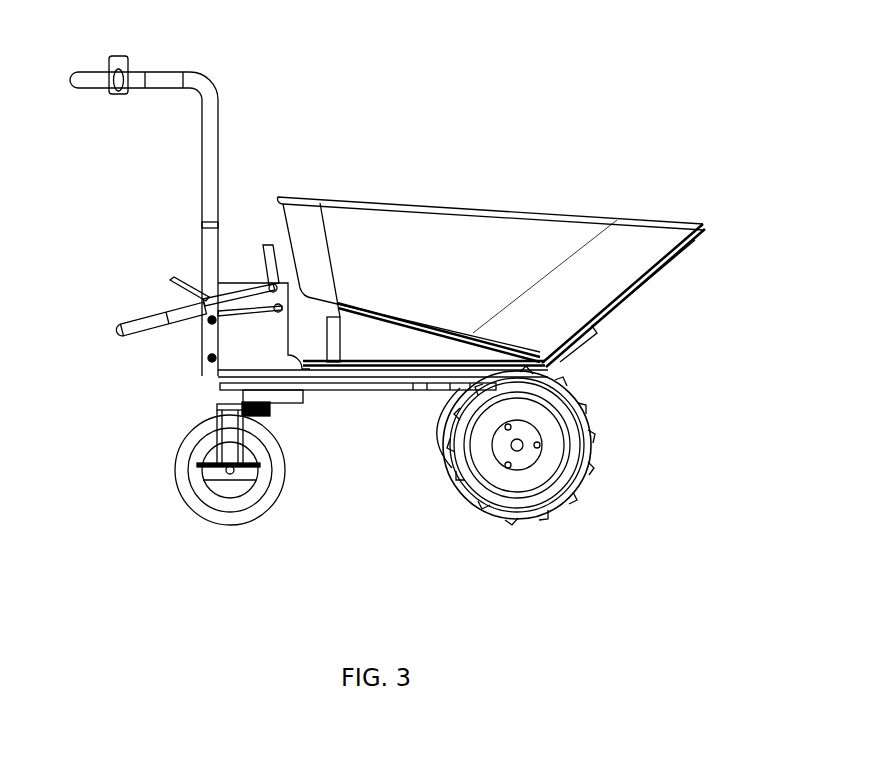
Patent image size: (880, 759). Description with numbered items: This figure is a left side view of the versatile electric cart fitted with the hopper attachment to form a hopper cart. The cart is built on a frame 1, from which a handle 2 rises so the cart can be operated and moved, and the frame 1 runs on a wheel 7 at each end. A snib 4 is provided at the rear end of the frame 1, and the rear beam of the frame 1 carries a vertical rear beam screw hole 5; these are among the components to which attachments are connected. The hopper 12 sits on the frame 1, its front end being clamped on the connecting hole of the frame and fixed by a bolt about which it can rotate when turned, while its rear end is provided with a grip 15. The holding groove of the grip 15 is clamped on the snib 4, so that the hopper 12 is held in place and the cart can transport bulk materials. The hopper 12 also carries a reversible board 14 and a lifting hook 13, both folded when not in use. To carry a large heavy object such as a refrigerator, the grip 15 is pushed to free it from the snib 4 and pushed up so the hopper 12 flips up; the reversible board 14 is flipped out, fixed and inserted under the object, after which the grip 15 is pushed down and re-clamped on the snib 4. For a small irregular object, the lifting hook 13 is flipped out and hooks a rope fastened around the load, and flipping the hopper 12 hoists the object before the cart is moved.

The frame 1 is at (382, 424).
The handle 2 is at (129, 216).
The snib 4 is at (229, 326).
The rear beam screw hole 5 is at (358, 435).
The wheel 7 is at (421, 470).
The hopper 12 is at (490, 235).
The lifting hook 13 is at (666, 248).
The reversible board 14 is at (646, 301).
The grip 15 is at (136, 352).